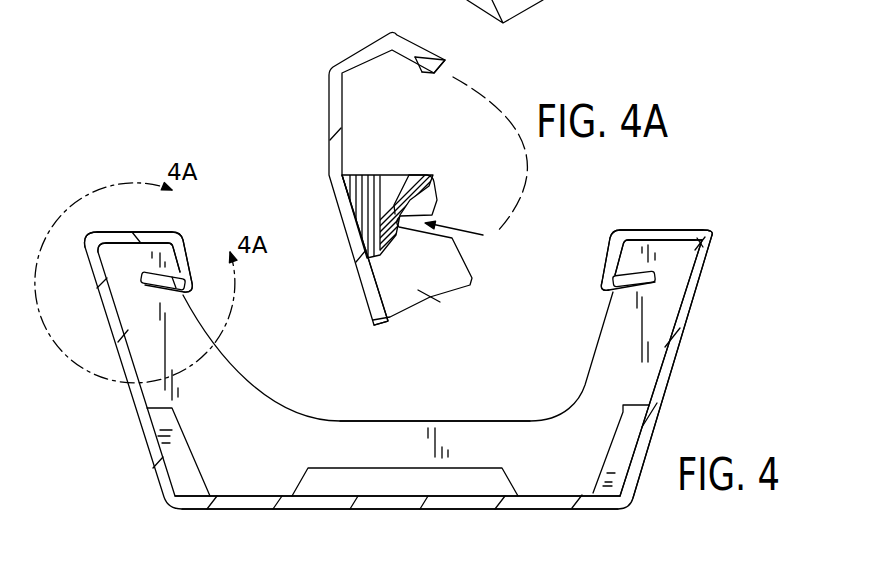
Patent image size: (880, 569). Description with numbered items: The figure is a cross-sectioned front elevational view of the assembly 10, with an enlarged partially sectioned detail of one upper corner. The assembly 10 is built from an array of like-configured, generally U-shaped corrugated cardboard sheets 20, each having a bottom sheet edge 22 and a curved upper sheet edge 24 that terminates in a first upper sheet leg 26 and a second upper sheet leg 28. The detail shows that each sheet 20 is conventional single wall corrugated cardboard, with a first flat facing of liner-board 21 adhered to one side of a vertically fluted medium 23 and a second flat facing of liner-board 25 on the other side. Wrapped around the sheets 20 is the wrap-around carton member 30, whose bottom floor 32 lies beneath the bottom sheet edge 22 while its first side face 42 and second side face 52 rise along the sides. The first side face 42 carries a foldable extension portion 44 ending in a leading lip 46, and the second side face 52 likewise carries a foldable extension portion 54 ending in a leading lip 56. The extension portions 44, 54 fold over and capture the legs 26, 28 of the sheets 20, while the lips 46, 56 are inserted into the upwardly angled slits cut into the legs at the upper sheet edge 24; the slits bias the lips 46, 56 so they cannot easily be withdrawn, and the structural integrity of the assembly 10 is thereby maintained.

In FIG. 4, the assembly 10 is at (750, 247).
In FIG. 4, the corrugated cardboard sheet 20 is at (642, 377).
In FIG. 4A, the first flat facing of liner-board 21 is at (360, 192).
In FIG. 4, the bottom sheet edge 22 is at (417, 468).
In FIG. 4A, the fluted medium 23 is at (370, 213).
In FIG. 4, the upper sheet edge 24 is at (380, 420).
In FIG. 4A, the second flat facing of liner-board 25 is at (423, 298).
In FIG. 4, the first upper sheet leg 26 is at (110, 255).
In FIG. 4, the second upper sheet leg 28 is at (683, 250).
In FIG. 4, the wrap-around carton member 30 is at (689, 302).
In FIG. 4, the bottom floor 32 is at (402, 503).
In FIG. 4, the first side face 42 is at (152, 440).
In FIG. 4A, the first side face 42 is at (358, 255).
In FIG. 4, the foldable extension portion 44 is at (127, 238).
In FIG. 4A, the foldable extension portion 44 is at (368, 48).
In FIG. 4, the leading lip 46 is at (153, 288).
In FIG. 4A, the leading lip 46 is at (447, 63).
In FIG. 4, the second side face 52 is at (652, 408).
In FIG. 4, the foldable extension portion 54 is at (665, 232).
In FIG. 4, the leading lip 56 is at (622, 288).